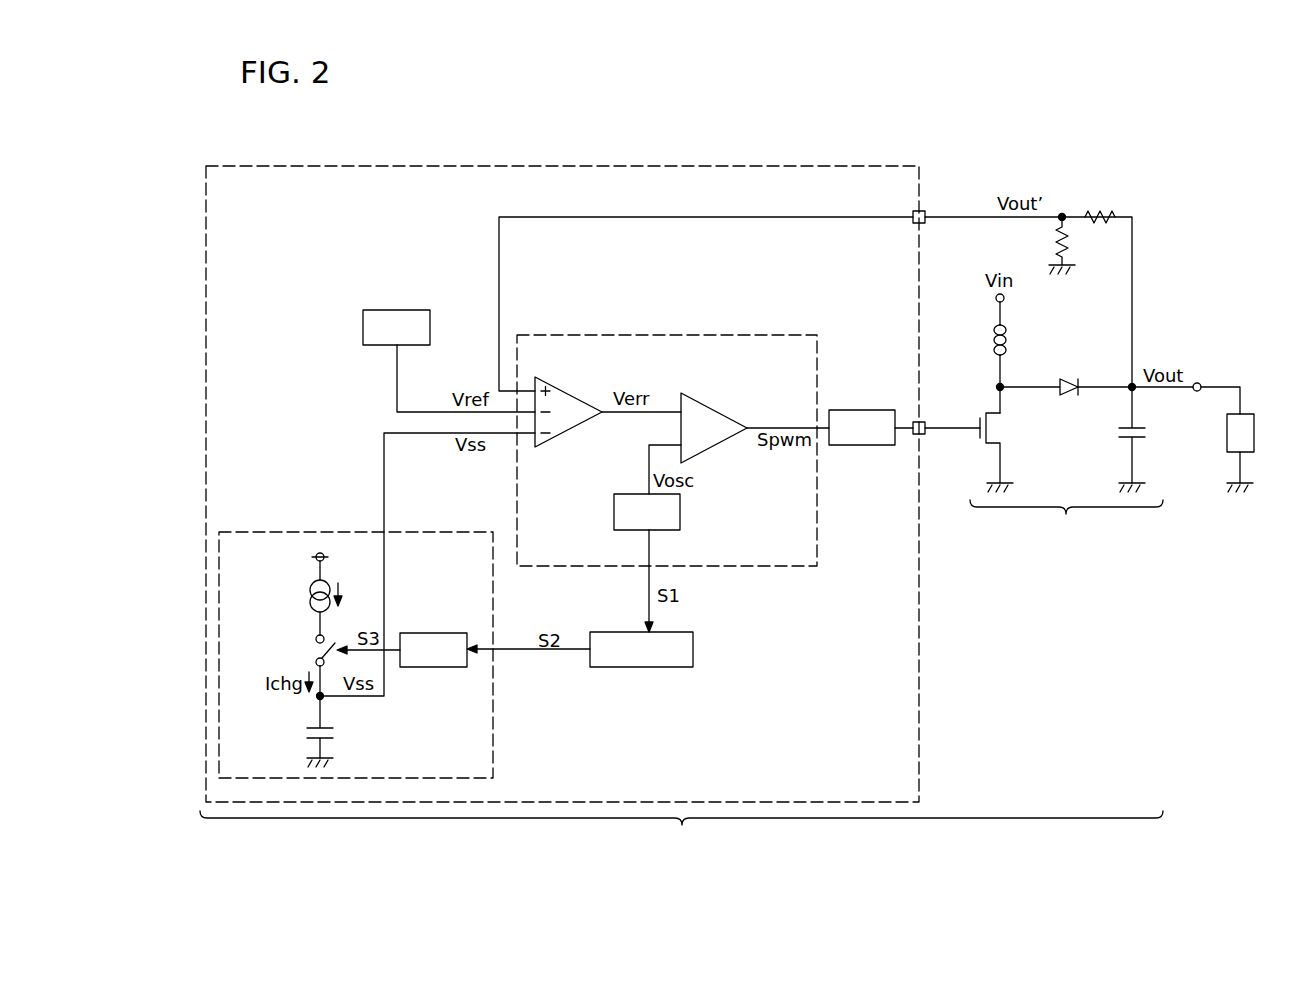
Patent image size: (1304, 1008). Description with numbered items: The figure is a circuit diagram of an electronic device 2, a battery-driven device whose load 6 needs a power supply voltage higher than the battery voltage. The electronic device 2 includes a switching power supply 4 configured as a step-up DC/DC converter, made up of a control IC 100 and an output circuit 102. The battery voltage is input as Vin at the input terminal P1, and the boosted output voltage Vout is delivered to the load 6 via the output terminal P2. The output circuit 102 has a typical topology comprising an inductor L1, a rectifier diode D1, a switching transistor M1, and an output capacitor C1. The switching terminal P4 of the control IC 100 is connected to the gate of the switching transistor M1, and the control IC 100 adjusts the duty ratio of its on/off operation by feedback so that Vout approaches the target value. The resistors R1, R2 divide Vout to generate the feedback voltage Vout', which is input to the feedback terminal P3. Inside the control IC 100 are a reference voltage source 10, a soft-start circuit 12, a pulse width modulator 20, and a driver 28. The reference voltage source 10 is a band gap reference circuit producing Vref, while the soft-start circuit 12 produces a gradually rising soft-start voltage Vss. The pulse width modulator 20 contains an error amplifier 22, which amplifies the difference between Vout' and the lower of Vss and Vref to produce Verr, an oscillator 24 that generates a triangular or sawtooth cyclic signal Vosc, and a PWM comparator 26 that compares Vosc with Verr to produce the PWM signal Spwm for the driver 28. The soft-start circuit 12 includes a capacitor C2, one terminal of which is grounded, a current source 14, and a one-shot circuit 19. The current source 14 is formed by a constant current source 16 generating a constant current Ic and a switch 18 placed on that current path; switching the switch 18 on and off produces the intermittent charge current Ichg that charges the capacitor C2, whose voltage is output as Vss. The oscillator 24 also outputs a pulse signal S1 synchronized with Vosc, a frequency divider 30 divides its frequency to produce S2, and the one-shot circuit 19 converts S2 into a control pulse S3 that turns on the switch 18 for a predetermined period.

The electronic device 2 is at (763, 886).
The switching power supply 4 is at (681, 830).
The load 6 is at (1254, 430).
The reference voltage source 10 is at (406, 310).
The soft-start circuit 12 is at (493, 745).
The current source 14 is at (295, 609).
The constant current source 16 is at (309, 596).
The switch 18 is at (300, 650).
The one-shot circuit 19 is at (440, 667).
The pulse width modulator 20 is at (680, 335).
The error amplifier 22 is at (567, 389).
The oscillator 24 is at (680, 512).
The PWM comparator 26 is at (710, 405).
The driver 28 is at (860, 410).
The frequency divider 30 is at (693, 655).
The control IC 100 is at (921, 710).
The output circuit 102 is at (1066, 519).
The input terminal P1 is at (1004, 298).
The output terminal P2 is at (1200, 382).
The feedback terminal P3 is at (925, 214).
The switching terminal P4 is at (922, 434).
The resistor R1 is at (1105, 210).
The resistor R2 is at (1070, 245).
The inductor L1 is at (1008, 340).
The rectifier diode D1 is at (1069, 397).
The switching transistor M1 is at (1005, 425).
The output capacitor C1 is at (1148, 433).
The capacitor C2 is at (336, 733).